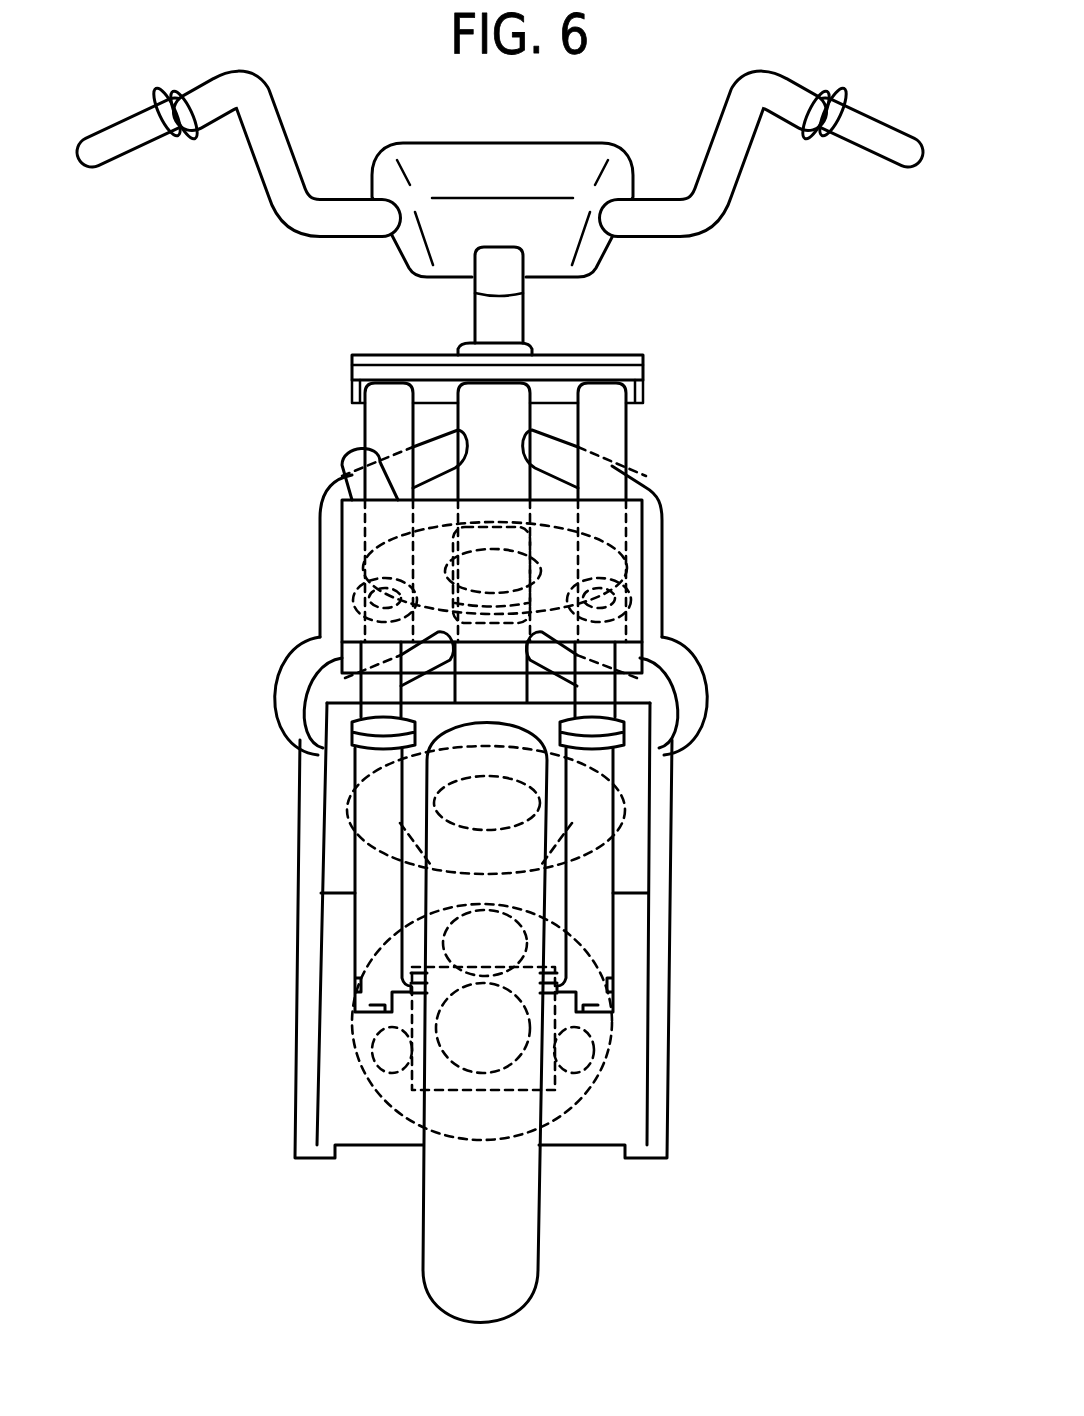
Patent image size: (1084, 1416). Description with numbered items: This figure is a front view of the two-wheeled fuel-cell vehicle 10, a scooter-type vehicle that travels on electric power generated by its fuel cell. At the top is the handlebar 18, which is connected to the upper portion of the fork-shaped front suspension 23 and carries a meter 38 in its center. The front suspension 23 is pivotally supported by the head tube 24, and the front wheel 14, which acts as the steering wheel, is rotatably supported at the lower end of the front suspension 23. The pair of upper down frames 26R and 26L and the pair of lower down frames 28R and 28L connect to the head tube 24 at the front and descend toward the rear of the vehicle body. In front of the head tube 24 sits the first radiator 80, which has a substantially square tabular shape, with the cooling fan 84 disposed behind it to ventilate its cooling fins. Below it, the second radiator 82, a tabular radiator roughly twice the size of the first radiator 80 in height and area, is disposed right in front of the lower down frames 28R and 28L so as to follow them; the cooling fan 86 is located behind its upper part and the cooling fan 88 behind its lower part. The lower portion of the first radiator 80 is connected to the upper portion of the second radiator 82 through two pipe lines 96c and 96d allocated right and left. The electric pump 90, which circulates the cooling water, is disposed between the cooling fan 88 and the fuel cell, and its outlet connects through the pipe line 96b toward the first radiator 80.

The two-wheeled fuel-cell vehicle 10 is at (732, 49).
The front wheel 14 is at (467, 1250).
The handlebar 18 is at (733, 160).
The front suspension 23 is at (590, 865).
The head tube 24 is at (498, 412).
The upper down frame 26R is at (320, 556).
The upper down frame 26L is at (660, 507).
The lower down frame 28R is at (322, 840).
The lower down frame 28L is at (664, 842).
The meter 38 is at (497, 163).
The first radiator 80 is at (365, 577).
The second radiator 82 is at (327, 1016).
The cooling fan 84 is at (613, 567).
The cooling fan 86 is at (600, 800).
The cooling fan 88 is at (643, 1077).
The electric pump 90 is at (363, 1027).
The pipe line 96b is at (347, 453).
The pipe line 96c is at (300, 662).
The pipe line 96d is at (682, 668).